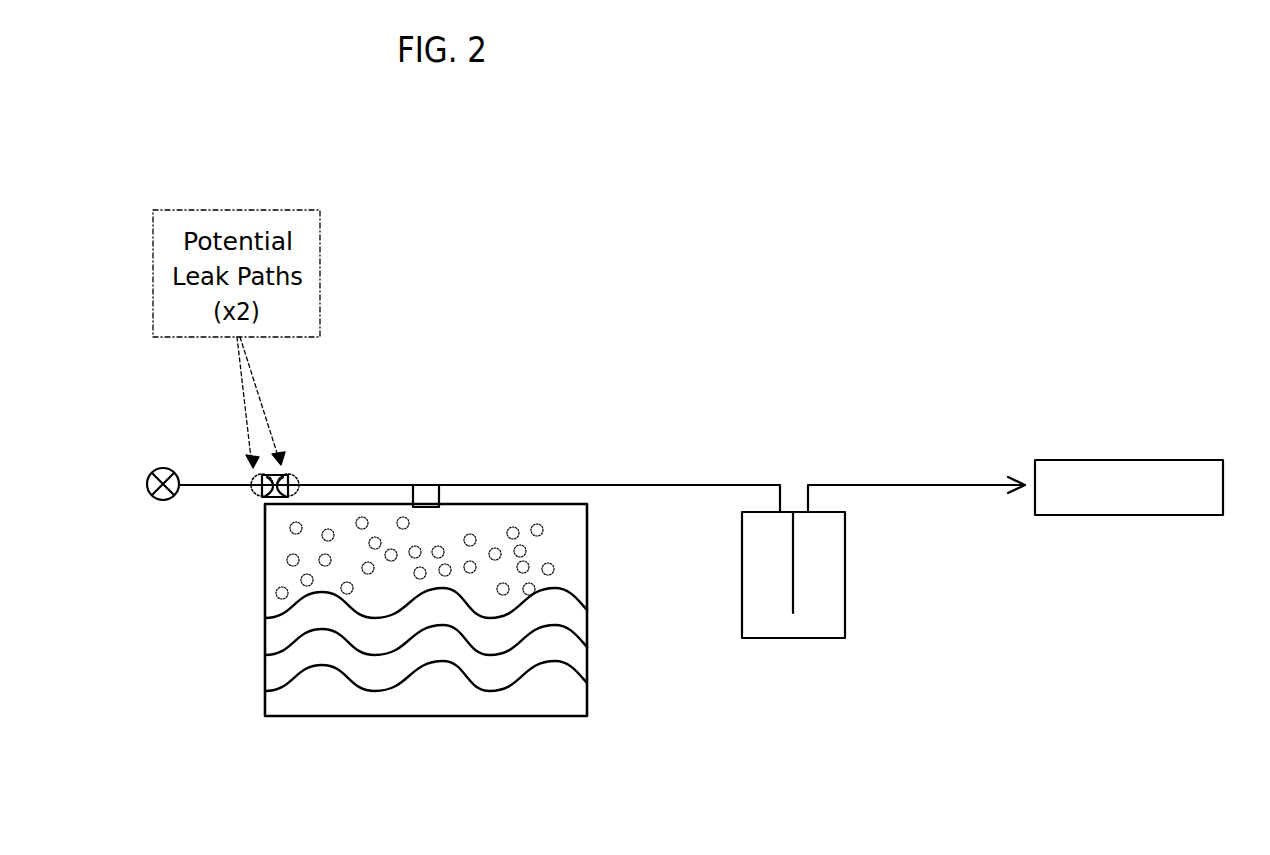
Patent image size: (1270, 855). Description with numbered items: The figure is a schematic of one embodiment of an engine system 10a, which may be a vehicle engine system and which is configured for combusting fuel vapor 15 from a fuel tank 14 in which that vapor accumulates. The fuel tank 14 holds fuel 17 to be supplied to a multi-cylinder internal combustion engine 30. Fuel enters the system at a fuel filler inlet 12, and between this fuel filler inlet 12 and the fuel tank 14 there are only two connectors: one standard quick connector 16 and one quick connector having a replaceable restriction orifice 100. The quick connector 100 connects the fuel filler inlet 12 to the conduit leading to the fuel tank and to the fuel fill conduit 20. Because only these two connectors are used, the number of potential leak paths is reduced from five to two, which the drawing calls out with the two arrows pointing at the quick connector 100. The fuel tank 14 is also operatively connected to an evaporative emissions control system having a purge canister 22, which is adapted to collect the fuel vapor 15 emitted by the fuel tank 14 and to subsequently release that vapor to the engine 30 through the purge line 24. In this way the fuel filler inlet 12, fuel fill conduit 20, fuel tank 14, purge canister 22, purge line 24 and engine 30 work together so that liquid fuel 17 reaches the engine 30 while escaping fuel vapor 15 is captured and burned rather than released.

The engine system 10a is at (590, 308).
The fuel filler inlet 12 is at (146, 497).
The fuel tank 14 is at (398, 717).
The fuel vapor 15 is at (283, 560).
The standard quick connector 16 is at (411, 492).
The fuel 17 is at (265, 693).
The fuel fill conduit 20 is at (631, 483).
The purge canister 22 is at (848, 600).
The purge line 24 is at (879, 483).
The internal combustion engine 30 is at (1113, 460).
The quick connector having a replaceable restriction orifice 100 is at (260, 498).